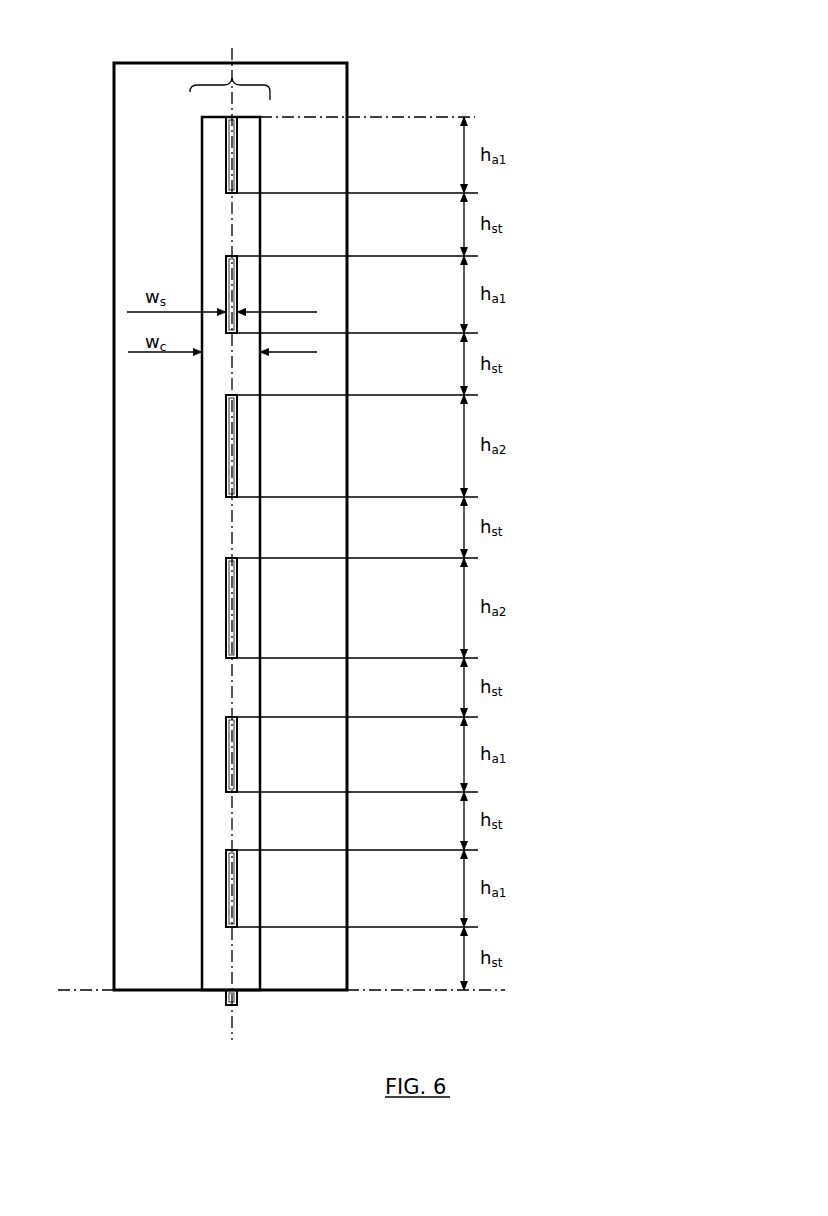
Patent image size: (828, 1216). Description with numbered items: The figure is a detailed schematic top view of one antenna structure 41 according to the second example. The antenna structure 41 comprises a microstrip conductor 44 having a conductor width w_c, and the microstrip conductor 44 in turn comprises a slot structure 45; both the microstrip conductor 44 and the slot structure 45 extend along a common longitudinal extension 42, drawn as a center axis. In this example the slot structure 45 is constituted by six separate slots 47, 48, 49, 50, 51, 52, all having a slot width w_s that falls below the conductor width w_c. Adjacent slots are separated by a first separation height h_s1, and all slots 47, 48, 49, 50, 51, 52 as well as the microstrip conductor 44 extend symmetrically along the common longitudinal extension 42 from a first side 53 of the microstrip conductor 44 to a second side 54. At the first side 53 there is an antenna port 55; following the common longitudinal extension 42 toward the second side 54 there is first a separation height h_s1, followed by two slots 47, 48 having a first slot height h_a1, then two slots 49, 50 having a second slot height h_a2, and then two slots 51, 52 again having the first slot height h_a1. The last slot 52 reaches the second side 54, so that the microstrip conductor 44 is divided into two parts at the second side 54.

The antenna structure 41 is at (254, 63).
The common longitudinal extension 42 is at (228, 48).
The microstrip conductor 44 is at (210, 497).
The slot structure 45 is at (232, 104).
The slot 47 is at (228, 890).
The slot 48 is at (228, 760).
The slot 49 is at (228, 625).
The slot 50 is at (228, 432).
The slot 51 is at (228, 272).
The slot 52 is at (228, 160).
The first side 53 is at (97, 990).
The second side 54 is at (373, 117).
The antenna port 55 is at (225, 992).